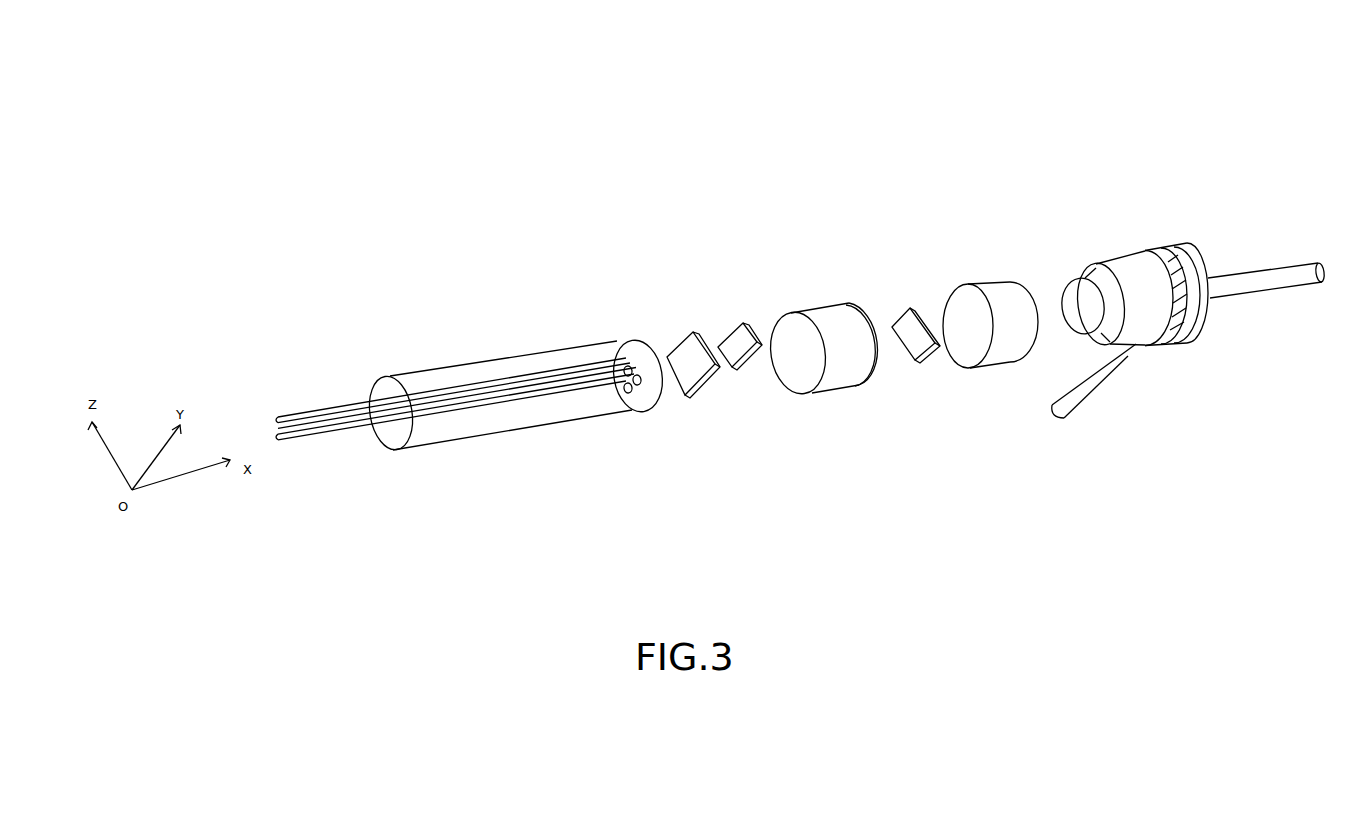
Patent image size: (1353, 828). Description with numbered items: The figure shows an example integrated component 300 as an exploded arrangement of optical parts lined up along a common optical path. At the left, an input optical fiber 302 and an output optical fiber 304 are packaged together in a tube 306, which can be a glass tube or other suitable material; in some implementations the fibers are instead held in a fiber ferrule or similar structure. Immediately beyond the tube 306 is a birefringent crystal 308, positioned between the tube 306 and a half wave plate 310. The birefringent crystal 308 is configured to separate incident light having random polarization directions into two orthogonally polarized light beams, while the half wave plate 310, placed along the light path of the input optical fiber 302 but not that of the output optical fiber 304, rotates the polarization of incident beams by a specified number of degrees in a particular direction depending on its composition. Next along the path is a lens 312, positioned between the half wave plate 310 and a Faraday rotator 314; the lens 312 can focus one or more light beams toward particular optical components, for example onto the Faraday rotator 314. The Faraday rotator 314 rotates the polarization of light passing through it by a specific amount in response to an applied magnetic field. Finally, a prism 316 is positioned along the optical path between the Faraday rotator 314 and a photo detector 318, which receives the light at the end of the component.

The integrated component 300 is at (132, 120).
The input optical fiber 302 is at (530, 378).
The output optical fiber 304 is at (528, 407).
The tube 306 is at (443, 432).
The birefringent crystal 308 is at (692, 380).
The half wave plate 310 is at (737, 353).
The lens 312 is at (842, 355).
The Faraday rotator 314 is at (903, 362).
The prism 316 is at (977, 343).
The photo detector 318 is at (1124, 360).